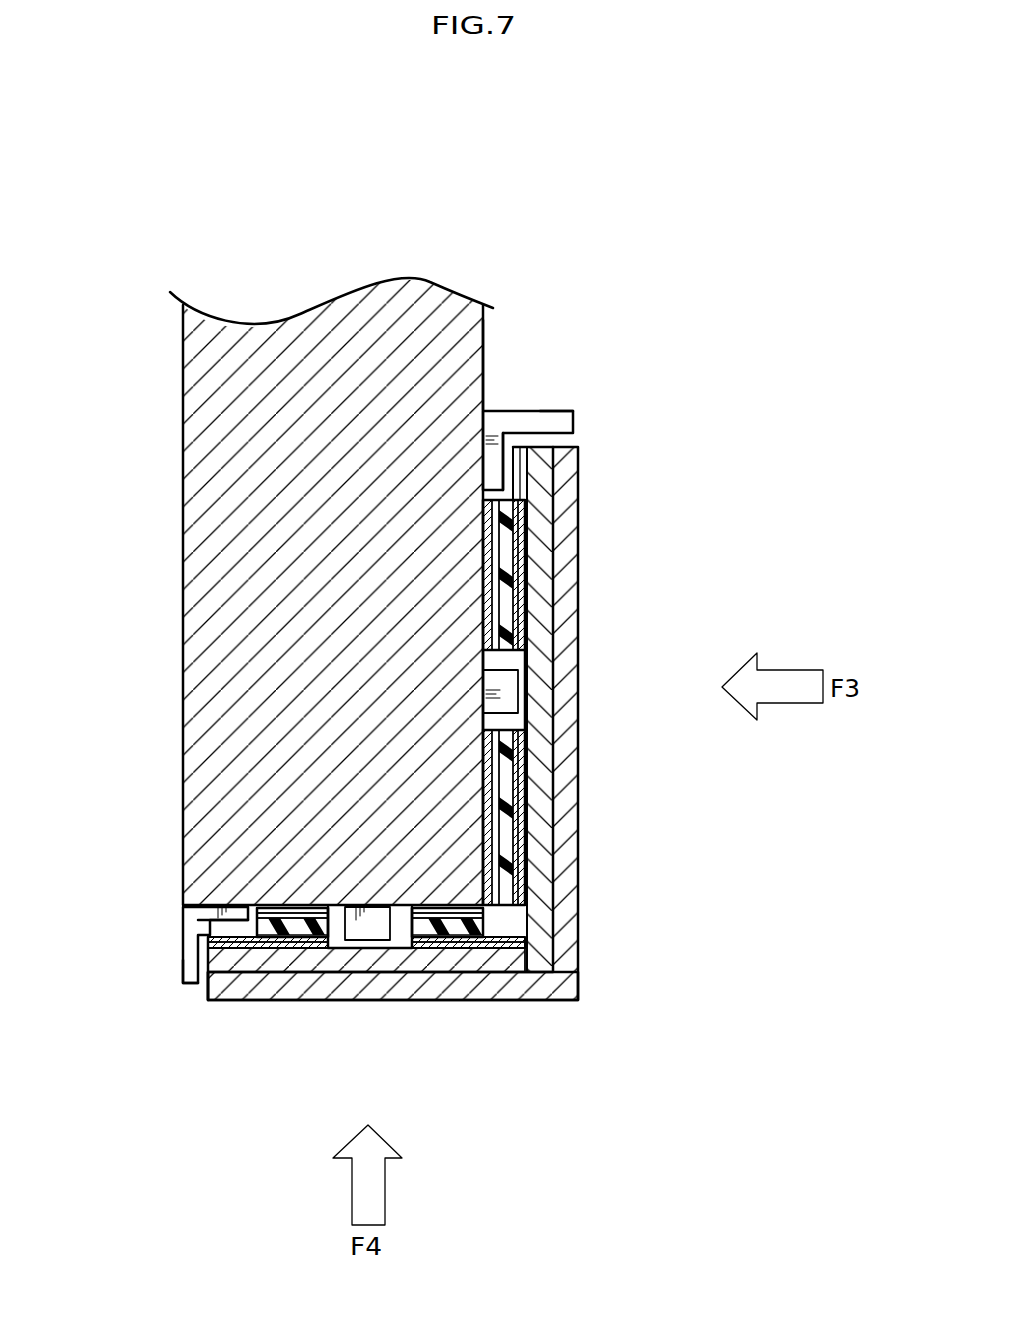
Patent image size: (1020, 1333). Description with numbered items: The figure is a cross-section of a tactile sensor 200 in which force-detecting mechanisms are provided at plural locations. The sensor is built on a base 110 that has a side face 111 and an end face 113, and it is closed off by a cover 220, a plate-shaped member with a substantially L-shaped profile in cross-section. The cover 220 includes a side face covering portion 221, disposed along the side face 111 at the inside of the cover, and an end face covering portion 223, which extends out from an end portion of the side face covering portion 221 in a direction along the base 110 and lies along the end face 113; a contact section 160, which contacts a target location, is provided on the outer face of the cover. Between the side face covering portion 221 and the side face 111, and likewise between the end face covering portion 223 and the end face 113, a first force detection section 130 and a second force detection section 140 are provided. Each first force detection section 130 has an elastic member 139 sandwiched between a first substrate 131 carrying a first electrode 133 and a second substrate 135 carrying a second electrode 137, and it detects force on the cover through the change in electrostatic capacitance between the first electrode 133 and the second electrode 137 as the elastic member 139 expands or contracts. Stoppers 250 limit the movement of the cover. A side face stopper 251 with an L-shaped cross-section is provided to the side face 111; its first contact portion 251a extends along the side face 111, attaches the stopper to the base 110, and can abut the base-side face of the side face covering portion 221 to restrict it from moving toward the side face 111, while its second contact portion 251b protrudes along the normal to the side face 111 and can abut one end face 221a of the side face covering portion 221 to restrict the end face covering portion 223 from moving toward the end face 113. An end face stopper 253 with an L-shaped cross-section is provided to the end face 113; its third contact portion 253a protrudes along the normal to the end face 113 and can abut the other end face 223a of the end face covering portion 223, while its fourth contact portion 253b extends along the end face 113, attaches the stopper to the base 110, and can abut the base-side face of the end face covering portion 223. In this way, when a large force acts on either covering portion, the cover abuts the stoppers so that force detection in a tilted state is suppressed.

The tactile sensor 200 is at (810, 292).
The base 110 is at (183, 352).
The side face 111 is at (493, 410).
The end face 113 is at (420, 962).
The first force detection section 130 is at (642, 511).
The first substrate 131 is at (520, 635).
The first electrode 133 is at (515, 607).
The second substrate 135 is at (490, 522).
The second electrode 137 is at (497, 553).
The elastic member 139 is at (507, 568).
The second force detection section 140 is at (512, 690).
The contact section 160 is at (560, 886).
The cover 220 is at (560, 497).
The side face covering portion 221 is at (555, 671).
The one end face 221a is at (538, 449).
The end face covering portion 223 is at (463, 968).
The other end face 223a is at (210, 958).
The stopper 250 is at (584, 422).
The side face stopper 251 is at (497, 428).
The first contact portion 251a is at (508, 450).
The second contact portion 251b is at (568, 411).
The end face stopper 253 is at (190, 920).
The third contact portion 253a is at (185, 976).
The fourth contact portion 253b is at (210, 918).